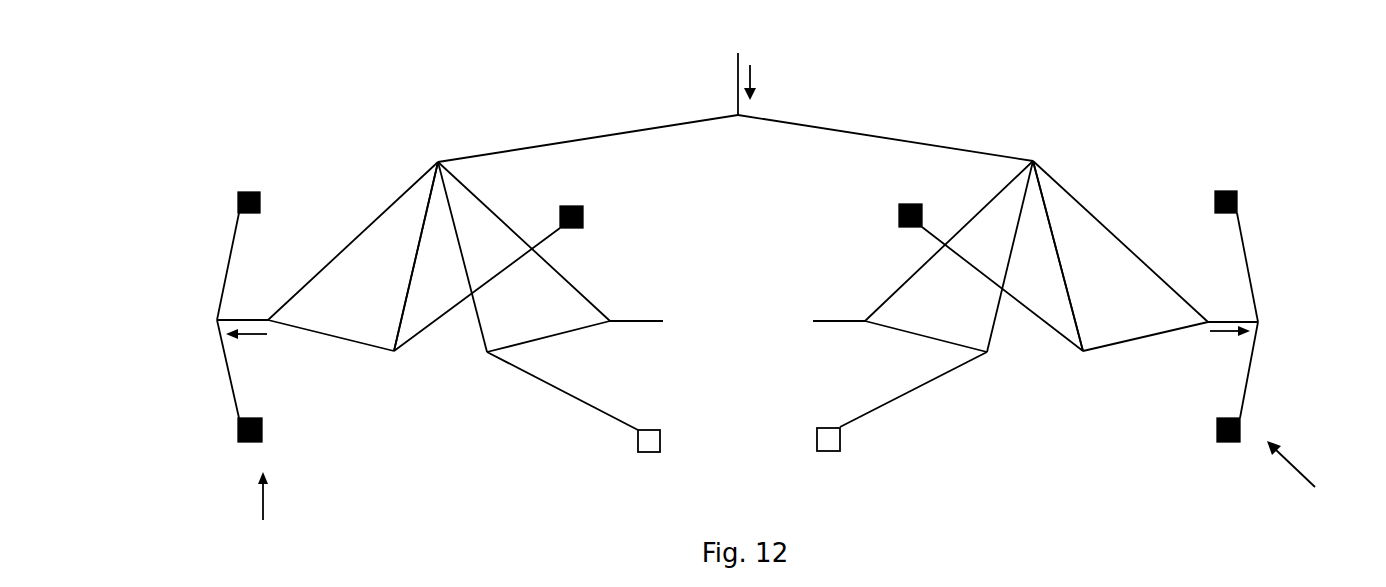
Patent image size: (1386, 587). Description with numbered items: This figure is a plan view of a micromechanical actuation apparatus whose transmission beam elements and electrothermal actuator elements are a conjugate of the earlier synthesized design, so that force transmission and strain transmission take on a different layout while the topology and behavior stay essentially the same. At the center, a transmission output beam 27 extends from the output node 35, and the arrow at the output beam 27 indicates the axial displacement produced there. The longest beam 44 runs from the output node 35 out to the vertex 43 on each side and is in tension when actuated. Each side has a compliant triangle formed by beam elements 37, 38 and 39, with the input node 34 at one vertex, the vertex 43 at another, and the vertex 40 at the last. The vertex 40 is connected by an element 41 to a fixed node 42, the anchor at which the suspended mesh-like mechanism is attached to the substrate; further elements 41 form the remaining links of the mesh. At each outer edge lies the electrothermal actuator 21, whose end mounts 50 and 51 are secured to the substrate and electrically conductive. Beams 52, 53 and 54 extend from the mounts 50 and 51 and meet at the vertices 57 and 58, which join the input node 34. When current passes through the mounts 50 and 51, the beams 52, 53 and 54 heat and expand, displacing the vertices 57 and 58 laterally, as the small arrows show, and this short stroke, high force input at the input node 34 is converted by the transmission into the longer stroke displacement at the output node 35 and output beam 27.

The actuator 21 is at (802, 507).
The transmission output beam 27 is at (737, 78).
The input node 34 is at (268, 318).
The output node 35 is at (738, 115).
The beam element 37 is at (343, 245).
The beam element 38 is at (412, 262).
The beam element 39 is at (307, 328).
The vertex 40 is at (394, 351).
The element 41 is at (229, 387).
The fixed node 42 is at (583, 207).
The vertex 43 is at (438, 162).
The element 44 is at (578, 137).
The end mount 50 is at (252, 192).
The end mount 51 is at (263, 430).
The beam 52 is at (1250, 264).
The beam 53 is at (1252, 375).
The beam 54 is at (223, 271).
The vertex 57 is at (1263, 322).
The vertex 58 is at (213, 321).